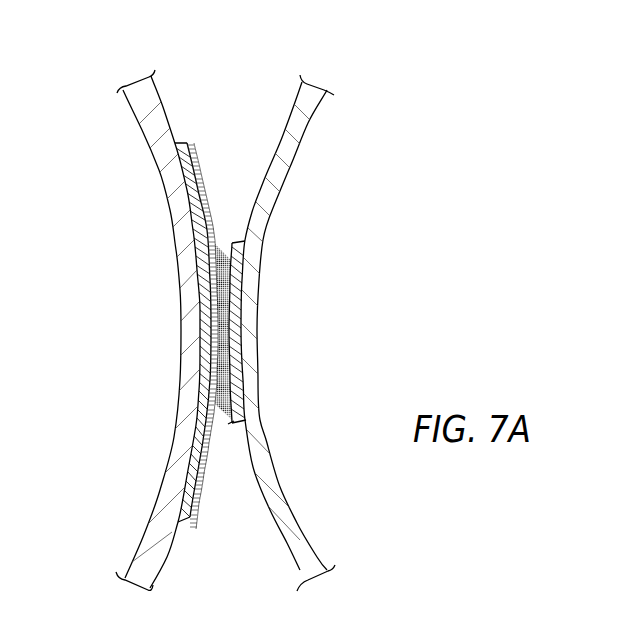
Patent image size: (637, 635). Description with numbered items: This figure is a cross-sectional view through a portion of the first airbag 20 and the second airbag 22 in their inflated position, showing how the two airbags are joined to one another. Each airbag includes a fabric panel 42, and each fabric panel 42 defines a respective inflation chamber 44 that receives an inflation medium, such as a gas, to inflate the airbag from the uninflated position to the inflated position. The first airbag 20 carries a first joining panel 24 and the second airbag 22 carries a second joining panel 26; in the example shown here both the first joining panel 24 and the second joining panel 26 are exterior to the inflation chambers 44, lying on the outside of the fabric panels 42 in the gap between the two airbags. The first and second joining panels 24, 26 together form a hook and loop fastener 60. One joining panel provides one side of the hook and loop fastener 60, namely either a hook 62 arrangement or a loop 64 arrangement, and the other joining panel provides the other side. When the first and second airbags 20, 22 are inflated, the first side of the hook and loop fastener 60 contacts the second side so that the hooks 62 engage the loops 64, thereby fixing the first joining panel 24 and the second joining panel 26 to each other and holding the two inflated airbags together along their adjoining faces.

The first airbag 20 is at (182, 66).
The second airbag 22 is at (263, 66).
The first joining panel 24 is at (195, 148).
The second joining panel 26 is at (238, 243).
The fabric panel 42 is at (160, 135).
The inflation chamber 44 is at (119, 351).
The hook and loop fastener 60 is at (181, 142).
The hooks 62 is at (205, 167).
The loops 64 is at (229, 425).